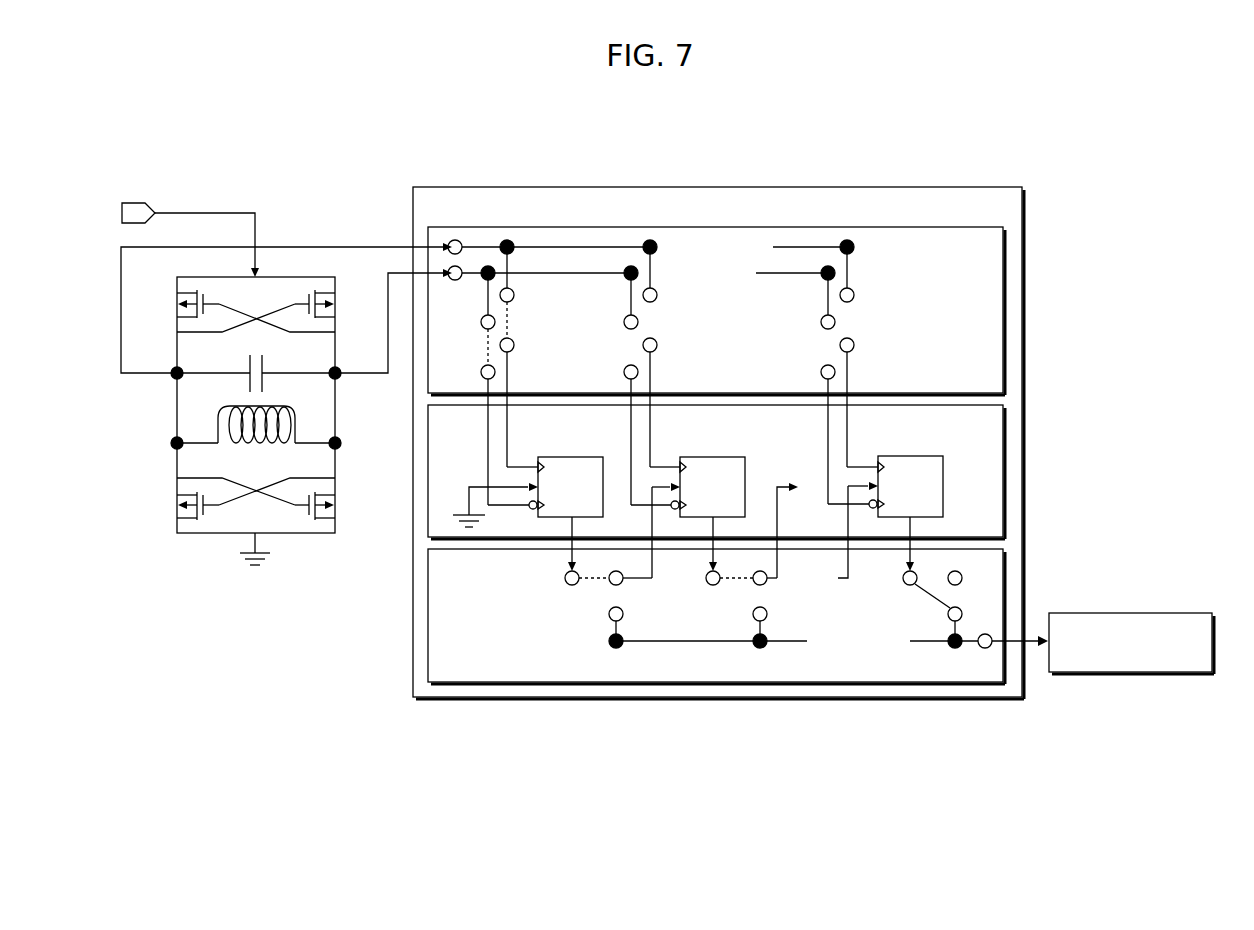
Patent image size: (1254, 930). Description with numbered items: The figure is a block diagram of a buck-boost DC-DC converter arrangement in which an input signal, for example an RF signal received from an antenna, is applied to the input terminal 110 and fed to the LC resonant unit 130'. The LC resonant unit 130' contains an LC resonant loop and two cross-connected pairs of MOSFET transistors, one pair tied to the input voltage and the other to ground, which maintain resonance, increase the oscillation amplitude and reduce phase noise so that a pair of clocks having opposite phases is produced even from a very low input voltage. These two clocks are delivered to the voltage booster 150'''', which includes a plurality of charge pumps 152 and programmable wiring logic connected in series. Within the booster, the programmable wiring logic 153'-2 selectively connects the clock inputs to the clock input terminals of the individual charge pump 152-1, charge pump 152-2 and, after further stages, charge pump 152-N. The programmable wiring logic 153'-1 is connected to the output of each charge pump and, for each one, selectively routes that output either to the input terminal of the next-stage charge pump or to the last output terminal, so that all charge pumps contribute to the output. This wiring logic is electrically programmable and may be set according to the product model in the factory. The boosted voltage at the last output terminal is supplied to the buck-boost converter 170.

The input terminal 110 is at (147, 203).
The LC resonant unit 130' is at (253, 410).
The voltage booster 150'''' is at (755, 431).
The programmable wiring logic 153'-2 is at (762, 366).
The charge pumps 152 is at (1008, 470).
The charge pump 152-1 is at (572, 457).
The charge pump 152-2 is at (714, 457).
The charge pump 152-N is at (912, 456).
The programmable wiring logic 153'-1 is at (762, 616).
The buck-boost converter 170 is at (1145, 613).